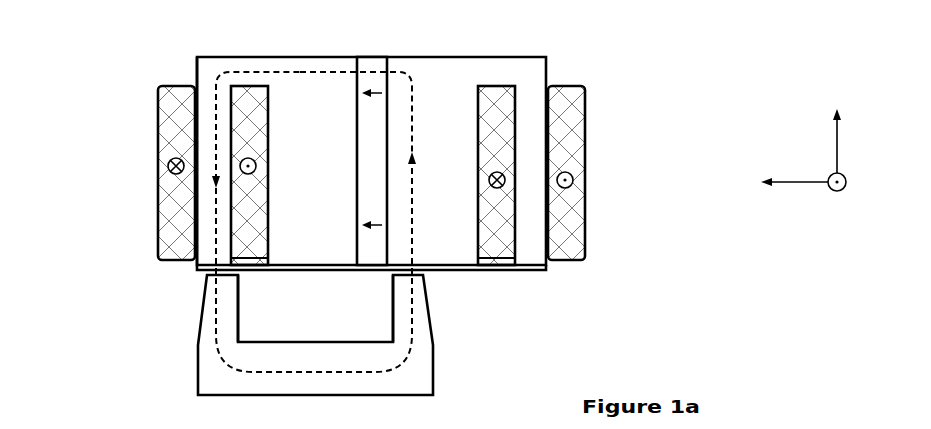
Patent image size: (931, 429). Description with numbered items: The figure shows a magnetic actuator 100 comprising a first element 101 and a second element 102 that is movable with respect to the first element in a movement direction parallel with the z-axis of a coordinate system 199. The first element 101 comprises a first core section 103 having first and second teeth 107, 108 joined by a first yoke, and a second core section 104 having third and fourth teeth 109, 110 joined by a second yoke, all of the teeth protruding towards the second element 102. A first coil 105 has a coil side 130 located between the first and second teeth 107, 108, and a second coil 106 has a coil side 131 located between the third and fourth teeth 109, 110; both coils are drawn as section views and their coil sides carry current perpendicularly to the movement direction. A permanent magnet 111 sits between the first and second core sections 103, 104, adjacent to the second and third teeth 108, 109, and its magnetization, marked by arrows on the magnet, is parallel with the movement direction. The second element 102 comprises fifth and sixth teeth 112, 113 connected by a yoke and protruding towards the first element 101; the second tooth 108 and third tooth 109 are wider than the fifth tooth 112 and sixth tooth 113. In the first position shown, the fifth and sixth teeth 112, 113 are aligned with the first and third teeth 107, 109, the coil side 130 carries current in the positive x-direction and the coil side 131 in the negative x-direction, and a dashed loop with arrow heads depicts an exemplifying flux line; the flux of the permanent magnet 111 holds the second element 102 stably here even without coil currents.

The magnetic actuator 100 is at (645, 117).
The first element 101 is at (95, 47).
The second element 102 is at (433, 355).
The first core section 103 is at (288, 57).
The second core section 104 is at (456, 57).
The first coil 105 is at (242, 86).
The second coil 106 is at (500, 86).
The first tooth 107 is at (207, 252).
The second tooth 108 is at (333, 244).
The third tooth 109 is at (463, 244).
The fourth tooth 110 is at (533, 257).
The permanent magnet 111 is at (370, 57).
The fifth tooth 112 is at (234, 289).
The sixth tooth 113 is at (400, 289).
The coil side 130 is at (255, 143).
The coil side 131 is at (490, 160).
The coordinate system 199 is at (816, 155).